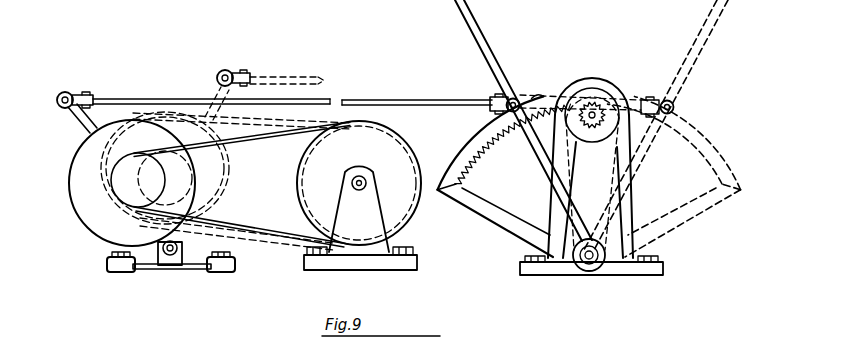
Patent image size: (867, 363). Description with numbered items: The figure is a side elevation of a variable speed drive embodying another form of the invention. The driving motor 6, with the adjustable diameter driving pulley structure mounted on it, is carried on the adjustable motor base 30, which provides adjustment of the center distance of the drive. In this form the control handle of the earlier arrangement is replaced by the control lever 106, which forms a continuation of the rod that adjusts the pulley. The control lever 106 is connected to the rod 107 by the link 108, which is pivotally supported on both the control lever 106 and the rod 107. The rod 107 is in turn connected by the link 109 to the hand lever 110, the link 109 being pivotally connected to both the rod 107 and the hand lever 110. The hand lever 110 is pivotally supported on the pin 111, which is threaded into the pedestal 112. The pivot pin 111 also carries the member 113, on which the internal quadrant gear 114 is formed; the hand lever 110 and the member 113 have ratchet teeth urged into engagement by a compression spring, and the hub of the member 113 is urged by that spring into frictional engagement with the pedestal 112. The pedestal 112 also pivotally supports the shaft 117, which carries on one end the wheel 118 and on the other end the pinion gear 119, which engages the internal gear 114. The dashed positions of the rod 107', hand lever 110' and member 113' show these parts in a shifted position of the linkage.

The driving motor 6 is at (80, 213).
The adjustable motor base 30 is at (205, 249).
The control lever 106 is at (82, 127).
The rod 107 is at (292, 89).
The rod in shifted position 107' is at (270, 70).
The link 108 is at (71, 93).
The link 109 is at (500, 99).
The hand lever 110 is at (523, 120).
The lever in shifted position 110' is at (667, 125).
The pin 111 is at (586, 264).
The pedestal 112 is at (647, 270).
The member 113 is at (489, 176).
The toothed sector in shifted position 113' is at (694, 176).
The internal quadrant gear 114 is at (470, 165).
The shaft 117 is at (594, 106).
The wheel 118 is at (578, 80).
The pinion gear 119 is at (586, 205).